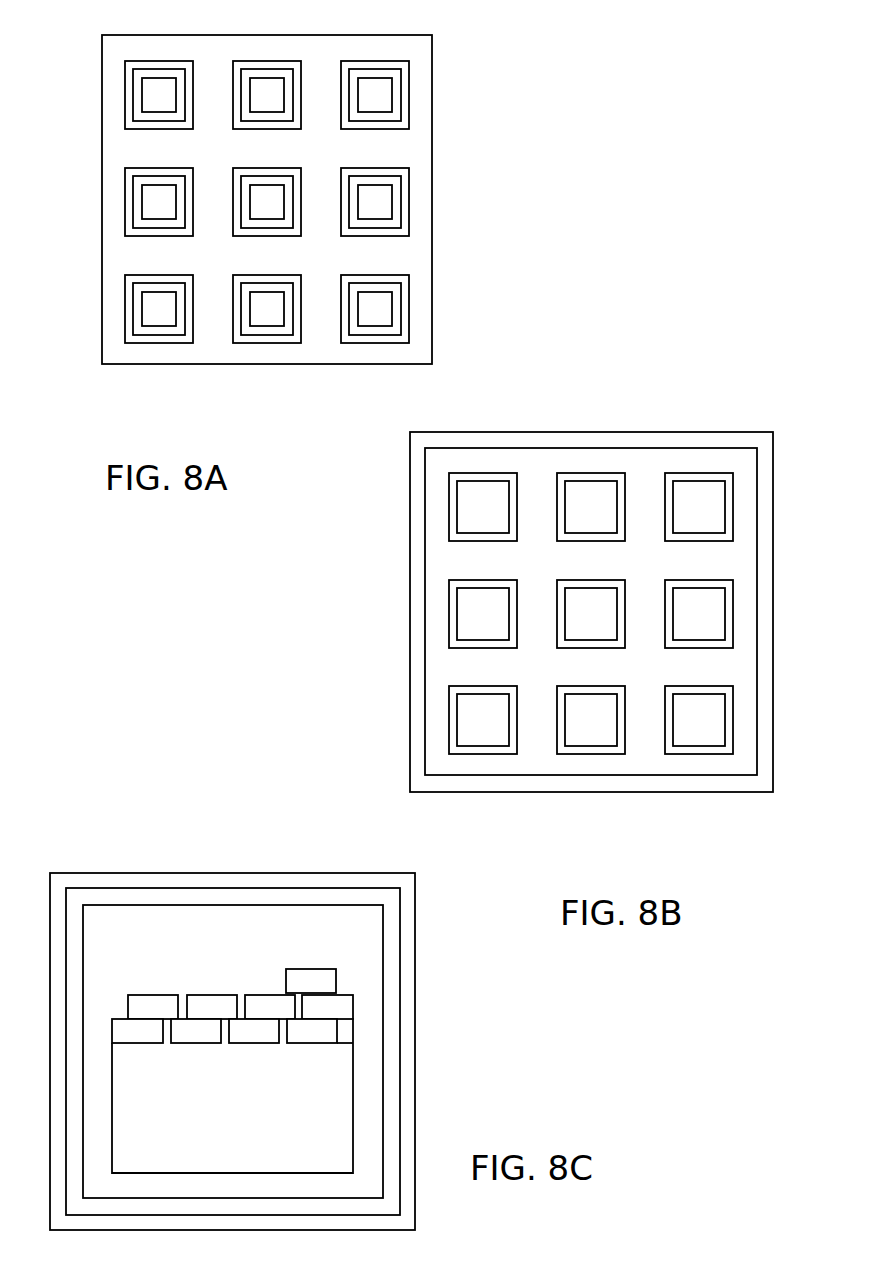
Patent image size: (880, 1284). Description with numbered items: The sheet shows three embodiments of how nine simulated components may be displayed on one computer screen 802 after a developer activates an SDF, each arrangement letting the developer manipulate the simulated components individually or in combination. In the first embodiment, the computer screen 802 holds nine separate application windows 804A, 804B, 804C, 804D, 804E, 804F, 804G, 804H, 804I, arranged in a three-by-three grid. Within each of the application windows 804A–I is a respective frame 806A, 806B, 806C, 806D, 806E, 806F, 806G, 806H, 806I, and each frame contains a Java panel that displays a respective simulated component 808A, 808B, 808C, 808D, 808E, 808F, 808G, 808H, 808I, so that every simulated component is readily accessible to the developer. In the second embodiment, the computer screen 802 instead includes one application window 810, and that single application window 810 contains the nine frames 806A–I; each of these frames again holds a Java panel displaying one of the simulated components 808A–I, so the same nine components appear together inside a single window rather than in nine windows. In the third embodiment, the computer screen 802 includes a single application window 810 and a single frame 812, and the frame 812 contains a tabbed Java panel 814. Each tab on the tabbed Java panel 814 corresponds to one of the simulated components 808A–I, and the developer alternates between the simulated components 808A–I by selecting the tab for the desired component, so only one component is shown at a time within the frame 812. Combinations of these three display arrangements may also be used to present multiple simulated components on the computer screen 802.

In FIG. 8B, the computer screen 802 is at (410, 770).
In FIG. 8C, the computer screen 802 is at (108, 873).
In FIG. 8A, the application window 804A is at (427, 79).
In FIG. 8A, the application window 804B is at (408, 205).
In FIG. 8A, the application window 804C is at (408, 305).
In FIG. 8A, the application window 804D is at (253, 343).
In FIG. 8A, the application window 804E is at (240, 234).
In FIG. 8A, the application window 804F is at (272, 61).
In FIG. 8A, the application window 804G is at (138, 342).
In FIG. 8A, the application window 804H is at (125, 223).
In FIG. 8A, the application window 804I is at (125, 103).
In FIG. 8A, the frame 806A is at (400, 86).
In FIG. 8B, the frame 806A is at (703, 463).
In FIG. 8B, the frame 806B is at (733, 586).
In FIG. 8B, the frame 806C is at (733, 706).
In FIG. 8B, the frame 806D is at (600, 754).
In FIG. 8B, the frame 806E is at (557, 640).
In FIG. 8B, the frame 806F is at (585, 473).
In FIG. 8B, the frame 806G is at (478, 754).
In FIG. 8B, the frame 806H is at (449, 607).
In FIG. 8B, the frame 806I is at (449, 505).
In FIG. 8A, the simulated component 808A is at (392, 106).
In FIG. 8B, the simulated component 808A is at (717, 473).
In FIG. 8C, the simulated component 808A is at (312, 1031).
In FIG. 8C, the simulated component 808B is at (254, 1031).
In FIG. 8C, the simulated component 808C is at (196, 1031).
In FIG. 8C, the simulated component 808D is at (137, 1031).
In FIG. 8C, the simulated component 808E is at (327, 1007).
In FIG. 8C, the simulated component 808F is at (270, 1007).
In FIG. 8C, the simulated component 808G is at (212, 1007).
In FIG. 8C, the simulated component 808H is at (153, 1007).
In FIG. 8C, the simulated component 808I is at (311, 981).
In FIG. 8B, the application window 810 is at (745, 792).
In FIG. 8C, the application window 810 is at (165, 888).
In FIG. 8C, the frame 812 is at (230, 905).
In FIG. 8C, the tabbed Java panel 814 is at (207, 1173).